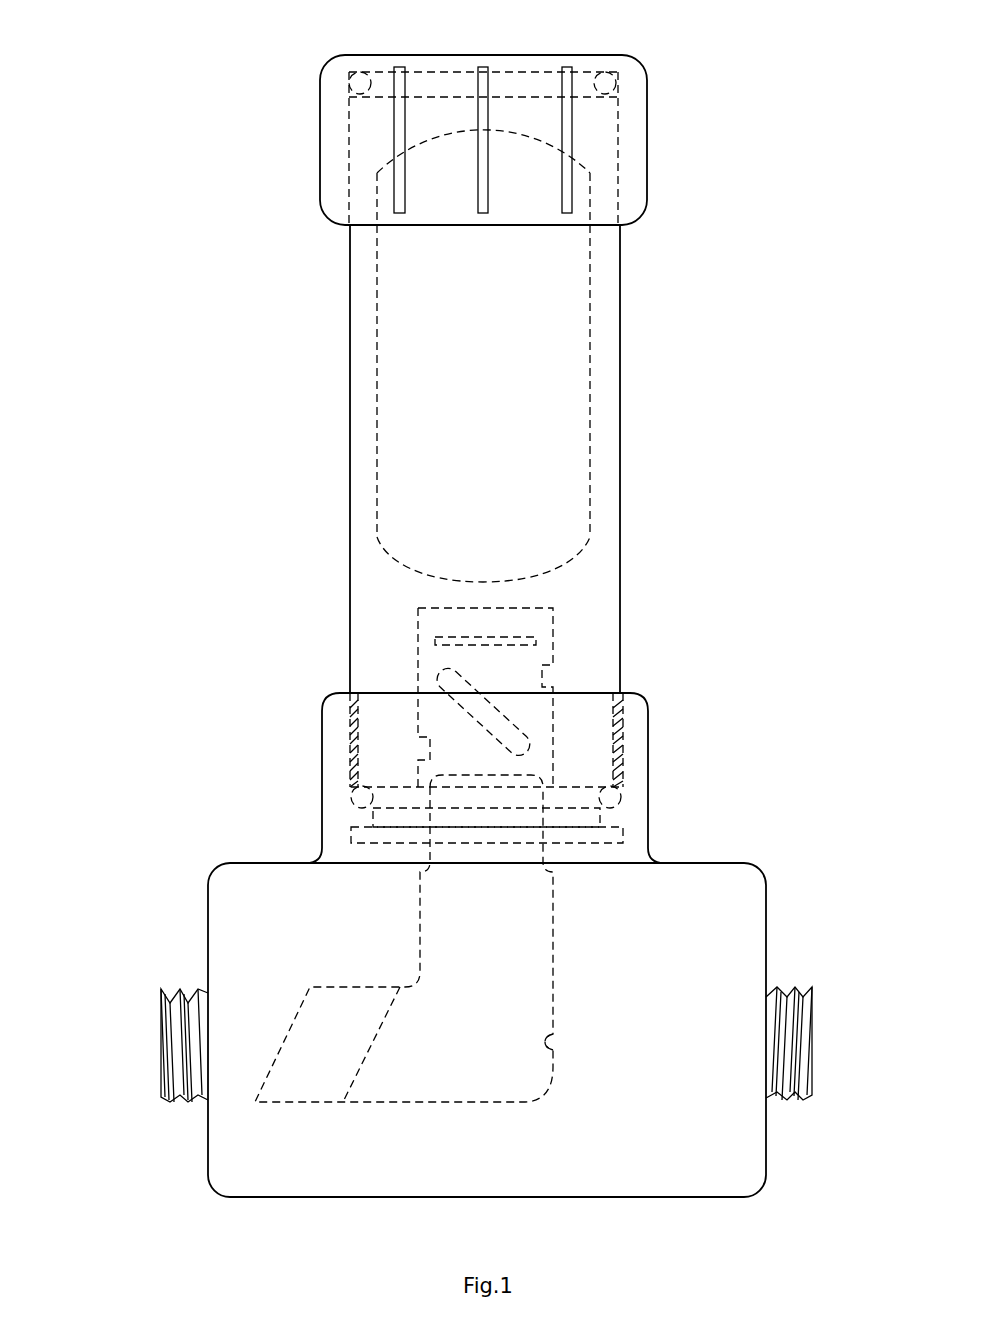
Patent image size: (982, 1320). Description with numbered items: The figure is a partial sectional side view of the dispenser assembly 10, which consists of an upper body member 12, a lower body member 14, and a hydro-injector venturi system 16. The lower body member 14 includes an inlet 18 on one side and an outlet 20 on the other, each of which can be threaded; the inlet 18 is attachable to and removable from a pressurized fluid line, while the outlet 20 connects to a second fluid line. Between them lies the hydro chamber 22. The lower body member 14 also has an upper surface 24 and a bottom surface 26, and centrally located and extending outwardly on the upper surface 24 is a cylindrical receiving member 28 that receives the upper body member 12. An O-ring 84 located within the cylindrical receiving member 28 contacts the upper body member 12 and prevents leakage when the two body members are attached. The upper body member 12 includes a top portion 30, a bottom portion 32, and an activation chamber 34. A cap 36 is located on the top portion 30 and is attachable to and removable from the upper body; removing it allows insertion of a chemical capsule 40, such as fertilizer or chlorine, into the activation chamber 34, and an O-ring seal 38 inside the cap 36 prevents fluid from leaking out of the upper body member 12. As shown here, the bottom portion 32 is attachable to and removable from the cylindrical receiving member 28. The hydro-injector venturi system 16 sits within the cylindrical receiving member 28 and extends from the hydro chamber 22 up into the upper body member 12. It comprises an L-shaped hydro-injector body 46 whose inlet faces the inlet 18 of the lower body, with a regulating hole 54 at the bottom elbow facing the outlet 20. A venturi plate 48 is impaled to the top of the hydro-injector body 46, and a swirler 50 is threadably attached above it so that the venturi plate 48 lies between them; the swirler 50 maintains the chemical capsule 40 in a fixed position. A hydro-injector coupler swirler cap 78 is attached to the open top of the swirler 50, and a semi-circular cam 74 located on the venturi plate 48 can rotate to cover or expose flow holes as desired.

The dispenser assembly 10 is at (733, 80).
The upper body member 12 is at (647, 625).
The lower body member 14 is at (770, 907).
The hydro-injector venturi system 16 is at (567, 902).
The inlet 18 is at (162, 1047).
The outlet 20 is at (813, 1070).
The hydro chamber 22 is at (445, 1150).
The upper surface 24 is at (697, 857).
The bottom surface 26 is at (635, 1207).
The cylindrical receiving member 28 is at (338, 715).
The top portion 30 is at (633, 126).
The bottom portion 32 is at (627, 708).
The activation chamber 34 is at (600, 557).
The cap 36 is at (452, 55).
The O-ring seal 38 is at (355, 85).
The chemical capsule 40 is at (433, 348).
The hydro-injector body 46 is at (485, 927).
The venturi plate 48 is at (350, 837).
The swirler 50 is at (440, 665).
The regulating hole 54 is at (555, 1043).
The cam 74 is at (373, 818).
The hydro-injector coupler swirler cap 78 is at (473, 618).
The O-ring 84 is at (363, 798).